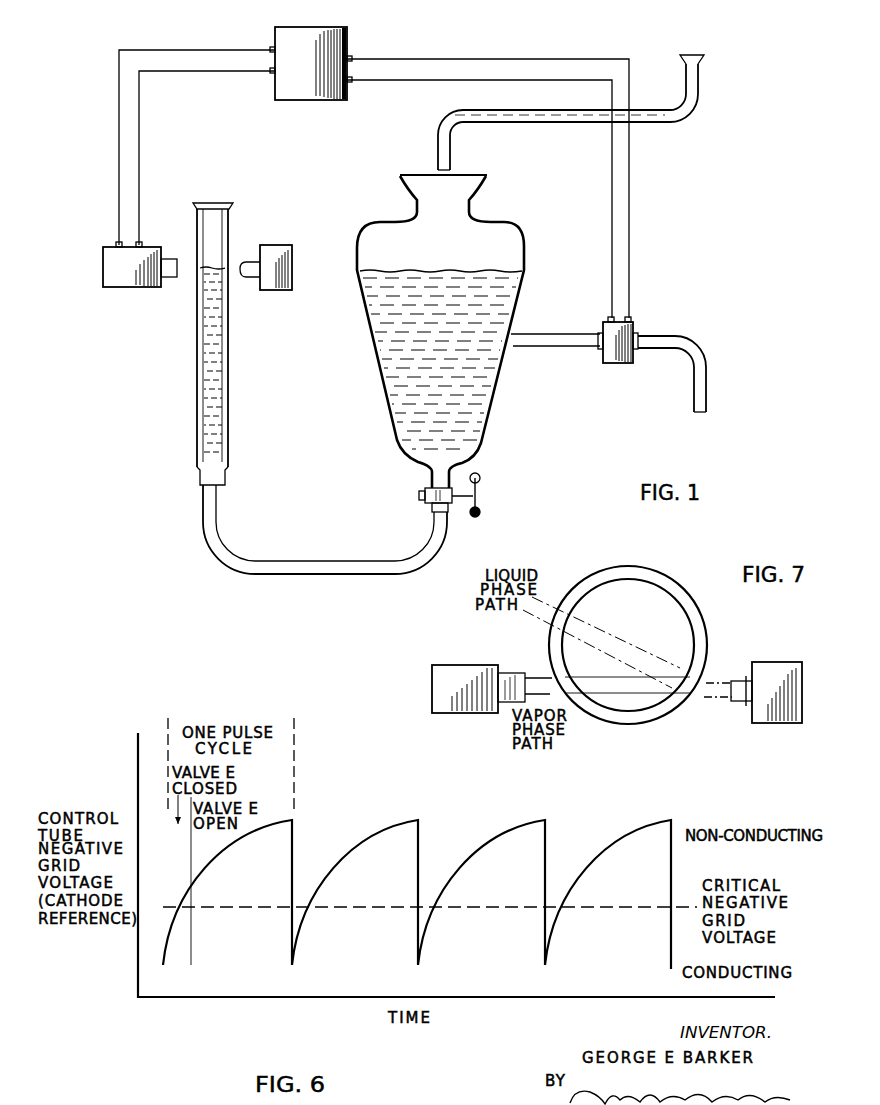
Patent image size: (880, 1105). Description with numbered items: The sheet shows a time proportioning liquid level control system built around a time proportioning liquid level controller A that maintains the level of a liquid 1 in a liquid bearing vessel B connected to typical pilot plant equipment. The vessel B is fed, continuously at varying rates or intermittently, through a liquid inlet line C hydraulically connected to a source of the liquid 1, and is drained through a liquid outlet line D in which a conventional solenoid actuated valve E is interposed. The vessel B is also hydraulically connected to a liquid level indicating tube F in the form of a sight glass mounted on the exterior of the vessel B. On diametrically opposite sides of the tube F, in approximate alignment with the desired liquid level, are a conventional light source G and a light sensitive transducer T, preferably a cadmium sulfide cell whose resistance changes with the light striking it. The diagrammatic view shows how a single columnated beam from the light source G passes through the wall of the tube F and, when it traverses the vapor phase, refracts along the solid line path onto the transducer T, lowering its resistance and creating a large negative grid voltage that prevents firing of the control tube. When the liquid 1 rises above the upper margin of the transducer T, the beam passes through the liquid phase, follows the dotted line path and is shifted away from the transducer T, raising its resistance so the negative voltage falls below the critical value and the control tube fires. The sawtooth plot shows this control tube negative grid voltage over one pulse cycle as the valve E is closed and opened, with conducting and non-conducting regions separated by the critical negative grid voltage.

In FIG. 1, the time proportioning liquid level controller A is at (350, 40).
In FIG. 1, the liquid bearing vessel B is at (532, 247).
In FIG. 1, the liquid inlet line C is at (437, 158).
In FIG. 1, the liquid outlet line D is at (707, 406).
In FIG. 1, the solenoid actuated valve E is at (633, 364).
In FIG. 1, the liquid level indicating tube F is at (230, 410).
In FIG. 7, the liquid level indicating tube F is at (675, 580).
In FIG. 1, the light source G is at (292, 245).
In FIG. 7, the light source G is at (770, 662).
In FIG. 1, the light sensitive transducer T is at (103, 246).
In FIG. 7, the light sensitive transducer T is at (437, 665).
In FIG. 1, the liquid 1 is at (473, 425).